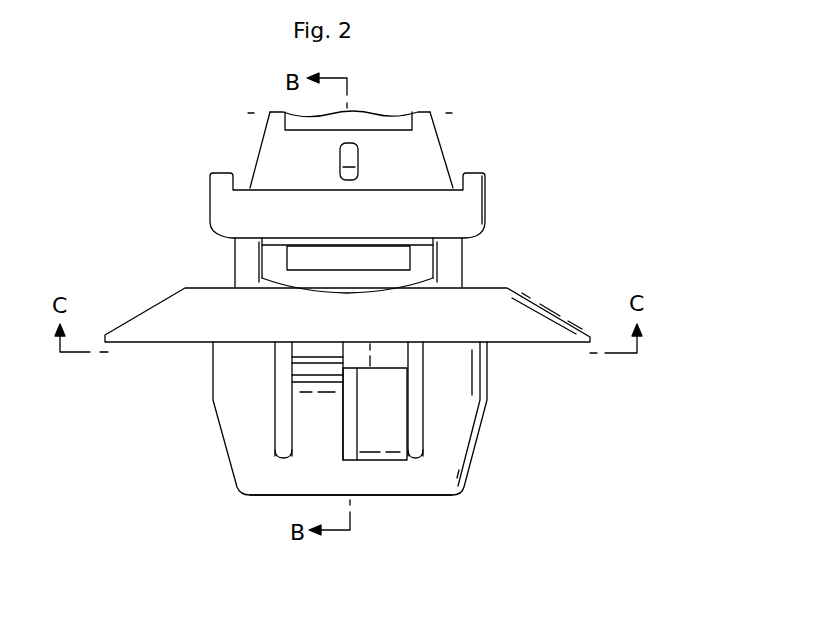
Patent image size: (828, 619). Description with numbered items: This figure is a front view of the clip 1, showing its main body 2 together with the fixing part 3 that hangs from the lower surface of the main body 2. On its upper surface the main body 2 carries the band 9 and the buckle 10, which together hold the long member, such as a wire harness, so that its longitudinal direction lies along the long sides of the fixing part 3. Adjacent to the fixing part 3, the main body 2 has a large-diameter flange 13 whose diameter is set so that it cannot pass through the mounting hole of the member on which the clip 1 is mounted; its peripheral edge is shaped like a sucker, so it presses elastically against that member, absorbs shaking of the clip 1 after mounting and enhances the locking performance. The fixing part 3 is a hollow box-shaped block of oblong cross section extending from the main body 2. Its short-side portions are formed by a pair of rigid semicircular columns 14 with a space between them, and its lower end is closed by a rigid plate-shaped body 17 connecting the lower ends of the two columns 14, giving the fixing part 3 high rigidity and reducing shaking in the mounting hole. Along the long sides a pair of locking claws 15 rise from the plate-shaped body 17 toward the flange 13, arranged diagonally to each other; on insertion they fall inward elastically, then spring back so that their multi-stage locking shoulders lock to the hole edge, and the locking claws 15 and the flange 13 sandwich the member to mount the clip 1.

The clip 1 is at (630, 231).
The main body 2 is at (466, 270).
The fixing part 3 is at (486, 365).
The band 9 is at (433, 168).
The buckle 10 is at (407, 216).
The flange 13 is at (182, 308).
The column 14 is at (237, 398).
The locking claw 15 is at (318, 427).
The plate-shaped body 17 is at (392, 495).